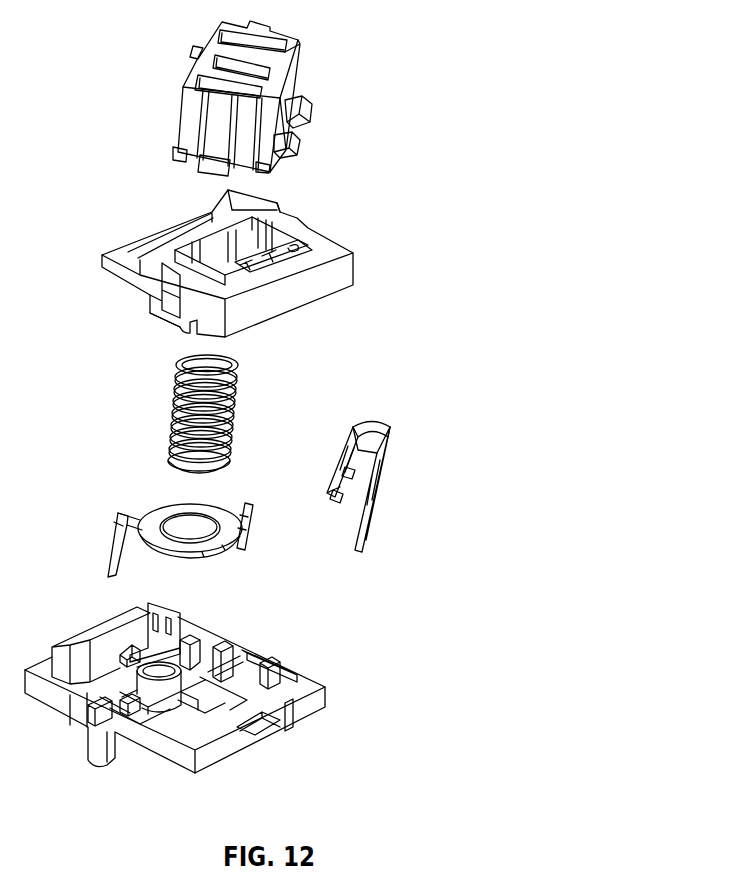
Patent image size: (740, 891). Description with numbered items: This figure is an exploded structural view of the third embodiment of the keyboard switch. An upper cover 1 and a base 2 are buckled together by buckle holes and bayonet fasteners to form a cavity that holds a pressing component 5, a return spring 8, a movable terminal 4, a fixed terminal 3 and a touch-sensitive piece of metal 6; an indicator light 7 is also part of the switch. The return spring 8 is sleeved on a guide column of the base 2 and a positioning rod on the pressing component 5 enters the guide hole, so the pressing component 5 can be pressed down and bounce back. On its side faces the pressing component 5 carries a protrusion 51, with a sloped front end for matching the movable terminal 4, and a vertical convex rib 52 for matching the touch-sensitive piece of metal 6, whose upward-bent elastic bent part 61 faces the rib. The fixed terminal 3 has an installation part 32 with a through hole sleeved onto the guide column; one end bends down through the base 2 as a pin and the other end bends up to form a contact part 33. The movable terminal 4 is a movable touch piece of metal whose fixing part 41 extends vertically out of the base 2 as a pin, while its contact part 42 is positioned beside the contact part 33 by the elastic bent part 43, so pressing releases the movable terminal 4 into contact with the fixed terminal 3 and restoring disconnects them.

The upper cover 1 is at (330, 286).
The base 2 is at (181, 667).
The fixed terminal 3 is at (205, 513).
The installation part 32 is at (170, 513).
The contact part 33 is at (253, 520).
The movable terminal 4 is at (414, 446).
The fixing part 41 is at (367, 515).
The contact part 42 is at (338, 448).
The elastic bent part 43 is at (383, 422).
The pressing component 5 is at (259, 98).
The protrusion 51 is at (310, 130).
The convex rib 52 is at (190, 68).
The touch-sensitive piece of metal 6 is at (176, 614).
The elastic bent part 61 is at (127, 642).
The indicator light 7 is at (93, 632).
The return spring 8 is at (247, 407).